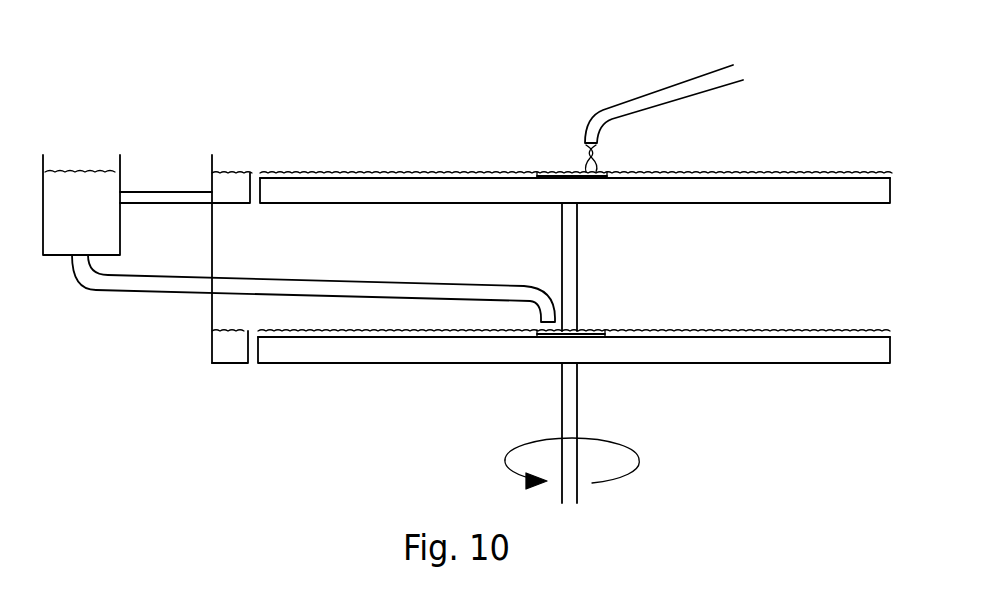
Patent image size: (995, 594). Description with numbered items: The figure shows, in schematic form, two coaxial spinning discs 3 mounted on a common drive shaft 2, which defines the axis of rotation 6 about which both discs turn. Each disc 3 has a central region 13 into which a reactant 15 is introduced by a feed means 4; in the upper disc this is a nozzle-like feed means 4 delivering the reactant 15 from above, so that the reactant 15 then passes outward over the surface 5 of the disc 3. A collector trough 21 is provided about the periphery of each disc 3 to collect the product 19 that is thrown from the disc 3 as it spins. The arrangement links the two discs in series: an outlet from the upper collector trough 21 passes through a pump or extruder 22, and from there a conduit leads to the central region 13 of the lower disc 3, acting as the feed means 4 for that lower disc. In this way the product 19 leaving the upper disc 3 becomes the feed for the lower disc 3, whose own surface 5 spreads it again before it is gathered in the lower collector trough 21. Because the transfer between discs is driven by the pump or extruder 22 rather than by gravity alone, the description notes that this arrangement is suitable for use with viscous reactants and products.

The drive shaft 2 is at (578, 390).
The disc 3 is at (815, 195).
The feed means 4 is at (663, 88).
The surface 5 is at (792, 172).
The axis of rotation 6 is at (578, 470).
The central region 13 is at (598, 178).
The reactant 15 is at (587, 163).
The product 19 is at (280, 170).
The collector trough 21 is at (233, 185).
The pump or extruder 22 is at (63, 244).